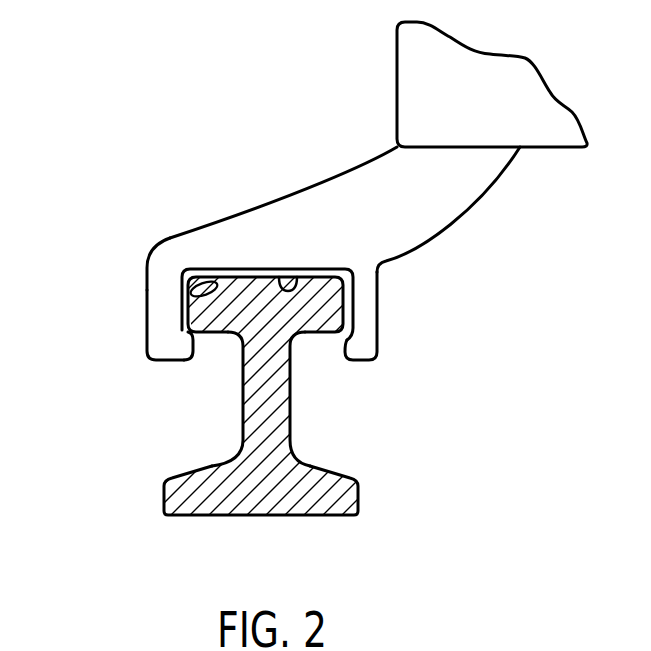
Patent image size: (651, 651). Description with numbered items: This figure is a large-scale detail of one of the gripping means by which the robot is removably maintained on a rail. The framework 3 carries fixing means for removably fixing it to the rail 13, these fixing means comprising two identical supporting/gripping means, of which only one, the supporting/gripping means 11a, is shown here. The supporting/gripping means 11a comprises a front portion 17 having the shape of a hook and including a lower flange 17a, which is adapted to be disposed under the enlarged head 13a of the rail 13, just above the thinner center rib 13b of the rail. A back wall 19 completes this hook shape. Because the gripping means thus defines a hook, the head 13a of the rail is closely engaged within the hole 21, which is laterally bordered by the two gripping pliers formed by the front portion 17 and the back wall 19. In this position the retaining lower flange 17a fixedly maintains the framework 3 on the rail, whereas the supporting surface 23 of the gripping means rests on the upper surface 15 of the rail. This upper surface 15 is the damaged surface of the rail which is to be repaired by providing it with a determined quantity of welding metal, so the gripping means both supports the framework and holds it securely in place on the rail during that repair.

The framework 3 is at (507, 88).
The supporting/gripping means 11a is at (260, 222).
The hole 21 is at (182, 268).
The supporting surface 23 is at (284, 274).
The back wall 19 is at (363, 290).
The upper surface 15 is at (205, 295).
The front portion 17 is at (168, 336).
The lower flange 17a is at (182, 343).
The rail 13 is at (217, 528).
The head 13a is at (327, 310).
The center rib 13b is at (280, 420).